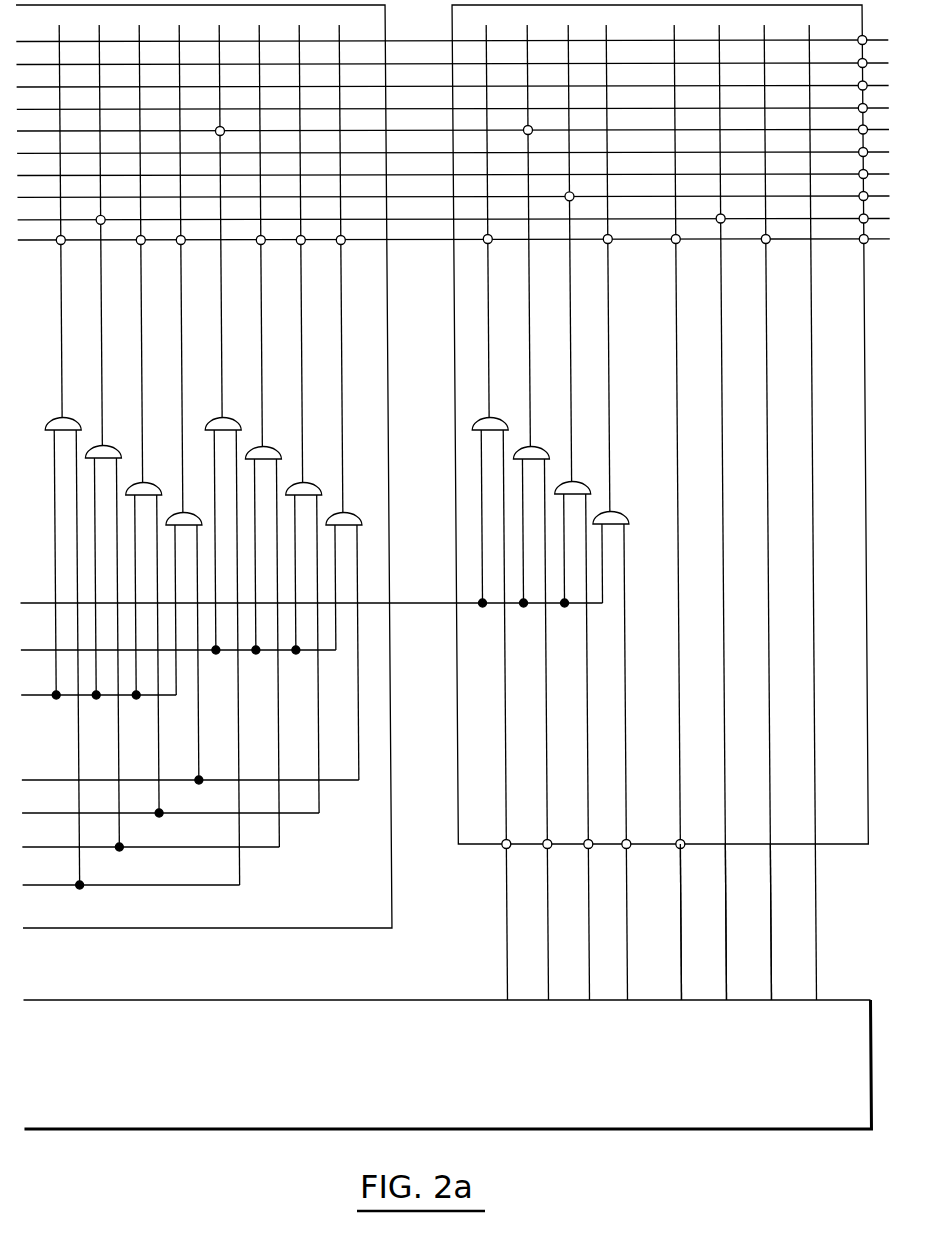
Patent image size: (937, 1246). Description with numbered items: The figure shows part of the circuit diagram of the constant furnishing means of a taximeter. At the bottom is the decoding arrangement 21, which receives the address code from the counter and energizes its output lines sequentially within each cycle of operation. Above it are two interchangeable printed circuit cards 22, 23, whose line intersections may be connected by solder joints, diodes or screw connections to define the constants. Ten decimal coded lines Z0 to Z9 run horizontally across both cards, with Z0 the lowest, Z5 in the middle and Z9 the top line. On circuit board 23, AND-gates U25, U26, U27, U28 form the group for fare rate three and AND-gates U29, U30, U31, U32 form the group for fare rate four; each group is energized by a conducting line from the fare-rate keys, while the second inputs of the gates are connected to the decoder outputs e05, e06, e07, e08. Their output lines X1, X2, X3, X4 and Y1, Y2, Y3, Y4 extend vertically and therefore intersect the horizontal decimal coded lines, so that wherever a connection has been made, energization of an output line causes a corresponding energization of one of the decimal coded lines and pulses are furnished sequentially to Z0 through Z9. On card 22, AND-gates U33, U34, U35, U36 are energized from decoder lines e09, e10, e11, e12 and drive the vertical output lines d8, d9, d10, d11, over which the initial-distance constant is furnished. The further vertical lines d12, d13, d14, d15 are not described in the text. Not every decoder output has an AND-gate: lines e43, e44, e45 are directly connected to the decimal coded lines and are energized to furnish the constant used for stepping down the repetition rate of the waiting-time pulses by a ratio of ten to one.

The decoding arrangement 21 is at (425, 1067).
The printed circuit card 22 is at (851, 518).
The printed circuit card 23 is at (346, 905).
The AND-gate U25 is at (81, 424).
The AND-gate U26 is at (113, 456).
The AND-gate U27 is at (159, 487).
The AND-gate U28 is at (199, 520).
The AND-gate U29 is at (240, 425).
The AND-gate U30 is at (279, 453).
The AND-gate U31 is at (319, 490).
The AND-gate U32 is at (359, 521).
The AND-gate U33 is at (506, 425).
The AND-gate U34 is at (547, 453).
The AND-gate U35 is at (588, 488).
The AND-gate U36 is at (628, 519).
The output line X1 is at (60, 367).
The output line X2 is at (100, 367).
The output line X3 is at (140, 367).
The output line X4 is at (180, 367).
The output line Y1 is at (220, 372).
The output line Y2 is at (260, 391).
The output line Y3 is at (300, 451).
The output line Y4 is at (341, 464).
The decimal coded line Z0 is at (49, 248).
The decimal coded line Z5 is at (49, 138).
The decimal coded line Z9 is at (46, 28).
The output line d8 is at (480, 325).
The output line d9 is at (520, 325).
The output line d10 is at (561, 325).
The output line d11 is at (600, 325).
The data line d12 is at (669, 325).
The data line d13 is at (714, 325).
The data line d14 is at (759, 325).
The data line d15 is at (804, 325).
The decoder output line e05 is at (228, 888).
The decoder output line e06 is at (274, 846).
The decoder output line e07 is at (314, 812).
The decoder output line e08 is at (348, 771).
The decoder output line e09 is at (499, 990).
The decoder output line e10 is at (539, 990).
The decoder output line e11 is at (580, 990).
The decoder output line e12 is at (618, 990).
The decoder output line e43 is at (672, 990).
The decoder output line e44 is at (717, 990).
The decoder output line e45 is at (762, 990).